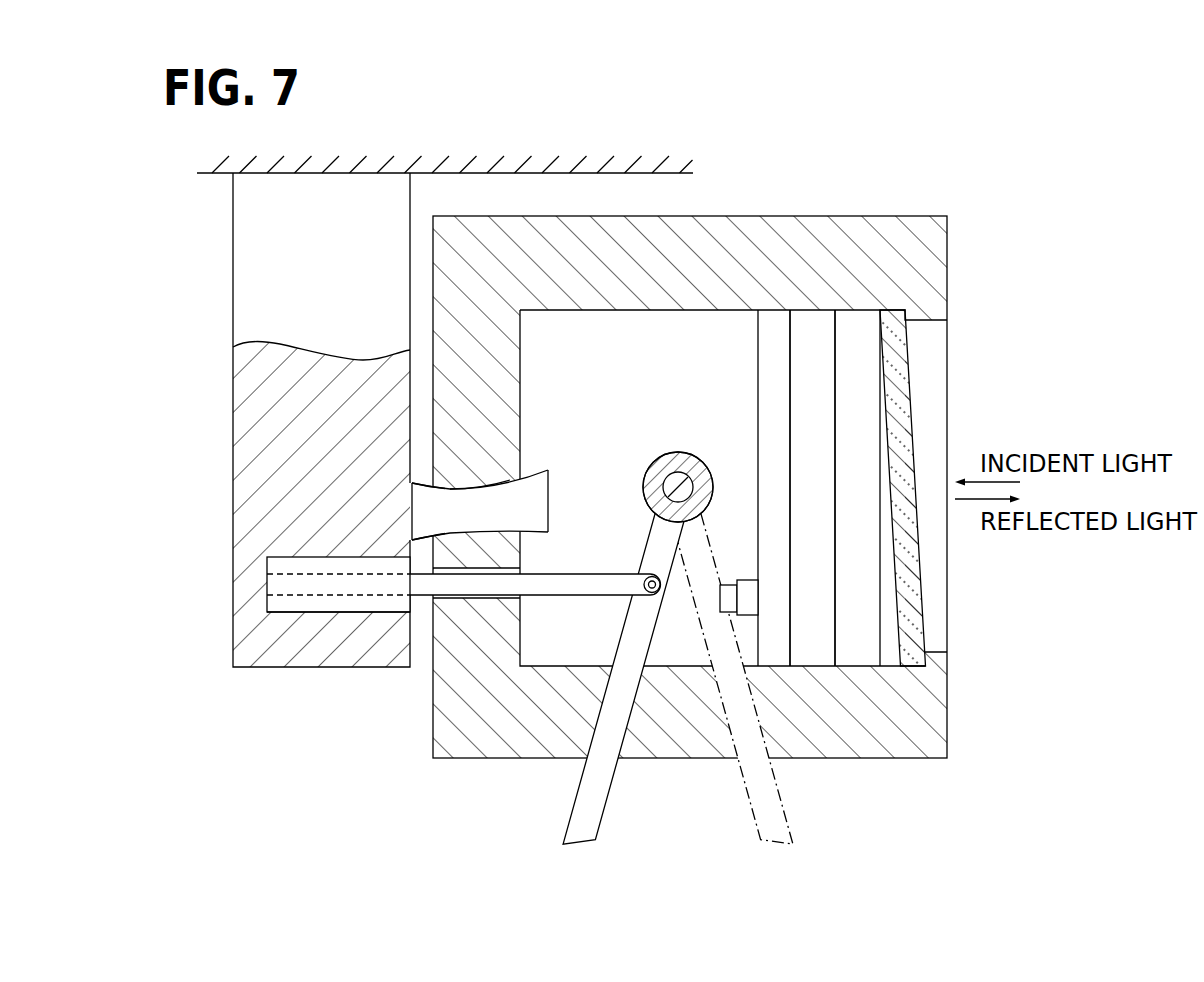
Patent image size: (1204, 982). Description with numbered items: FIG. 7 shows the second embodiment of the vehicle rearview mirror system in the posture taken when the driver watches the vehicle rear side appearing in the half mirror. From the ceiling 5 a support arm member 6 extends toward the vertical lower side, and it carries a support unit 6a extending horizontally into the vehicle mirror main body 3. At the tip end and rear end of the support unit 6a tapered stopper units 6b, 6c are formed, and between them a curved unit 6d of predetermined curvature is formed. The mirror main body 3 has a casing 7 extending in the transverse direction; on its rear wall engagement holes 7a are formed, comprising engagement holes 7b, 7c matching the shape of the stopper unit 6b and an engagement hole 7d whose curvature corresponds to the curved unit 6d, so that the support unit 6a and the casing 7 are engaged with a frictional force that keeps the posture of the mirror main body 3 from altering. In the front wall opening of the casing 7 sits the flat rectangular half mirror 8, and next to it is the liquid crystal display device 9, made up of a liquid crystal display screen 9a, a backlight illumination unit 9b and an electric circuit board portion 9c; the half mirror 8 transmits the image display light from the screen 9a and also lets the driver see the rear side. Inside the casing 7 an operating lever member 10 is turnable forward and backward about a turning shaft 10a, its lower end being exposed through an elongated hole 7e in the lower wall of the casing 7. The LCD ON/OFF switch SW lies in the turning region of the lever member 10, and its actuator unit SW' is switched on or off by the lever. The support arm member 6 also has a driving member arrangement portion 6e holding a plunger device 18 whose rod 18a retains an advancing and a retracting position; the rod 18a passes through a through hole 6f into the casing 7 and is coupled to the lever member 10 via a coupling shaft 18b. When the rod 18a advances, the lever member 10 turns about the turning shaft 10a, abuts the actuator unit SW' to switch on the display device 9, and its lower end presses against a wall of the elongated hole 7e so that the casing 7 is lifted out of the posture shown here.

The vehicle mirror main body 3 is at (726, 210).
The ceiling 5 is at (462, 148).
The support arm member 6 is at (241, 288).
The support unit 6a is at (473, 487).
The stopper unit 6b is at (427, 533).
The stopper unit 6c is at (538, 468).
The curved unit 6d is at (512, 566).
The driving member arrangement portion 6e is at (362, 603).
The through hole 6f is at (477, 600).
The casing 7 is at (629, 287).
The engagement holes 7a is at (505, 483).
The engagement hole 7b is at (420, 493).
The engagement hole 7c is at (520, 535).
The engagement hole 7d is at (425, 499).
The elongated hole 7e is at (708, 745).
The half mirror 8 is at (900, 447).
The liquid crystal display device 9 is at (825, 379).
The liquid crystal display screen 9a is at (860, 325).
The backlight illumination unit 9b is at (815, 330).
The electric circuit board portion 9c is at (773, 325).
The operating lever member 10 is at (617, 717).
The turning shaft 10a is at (687, 475).
The plunger device 18 is at (290, 600).
The rod 18a is at (565, 590).
The coupling shaft 18b is at (645, 578).
The LCD ON/OFF switch SW is at (784, 549).
The actuator unit SW' is at (732, 561).